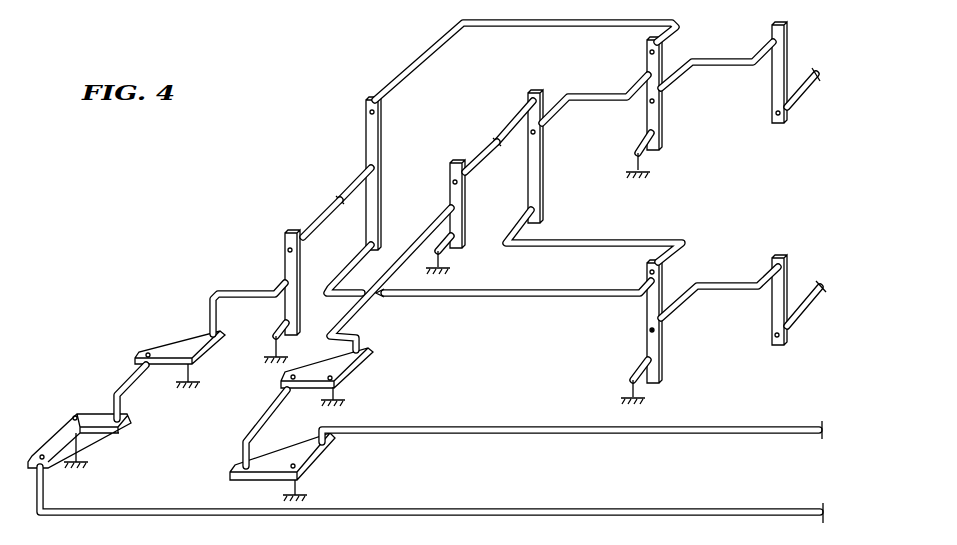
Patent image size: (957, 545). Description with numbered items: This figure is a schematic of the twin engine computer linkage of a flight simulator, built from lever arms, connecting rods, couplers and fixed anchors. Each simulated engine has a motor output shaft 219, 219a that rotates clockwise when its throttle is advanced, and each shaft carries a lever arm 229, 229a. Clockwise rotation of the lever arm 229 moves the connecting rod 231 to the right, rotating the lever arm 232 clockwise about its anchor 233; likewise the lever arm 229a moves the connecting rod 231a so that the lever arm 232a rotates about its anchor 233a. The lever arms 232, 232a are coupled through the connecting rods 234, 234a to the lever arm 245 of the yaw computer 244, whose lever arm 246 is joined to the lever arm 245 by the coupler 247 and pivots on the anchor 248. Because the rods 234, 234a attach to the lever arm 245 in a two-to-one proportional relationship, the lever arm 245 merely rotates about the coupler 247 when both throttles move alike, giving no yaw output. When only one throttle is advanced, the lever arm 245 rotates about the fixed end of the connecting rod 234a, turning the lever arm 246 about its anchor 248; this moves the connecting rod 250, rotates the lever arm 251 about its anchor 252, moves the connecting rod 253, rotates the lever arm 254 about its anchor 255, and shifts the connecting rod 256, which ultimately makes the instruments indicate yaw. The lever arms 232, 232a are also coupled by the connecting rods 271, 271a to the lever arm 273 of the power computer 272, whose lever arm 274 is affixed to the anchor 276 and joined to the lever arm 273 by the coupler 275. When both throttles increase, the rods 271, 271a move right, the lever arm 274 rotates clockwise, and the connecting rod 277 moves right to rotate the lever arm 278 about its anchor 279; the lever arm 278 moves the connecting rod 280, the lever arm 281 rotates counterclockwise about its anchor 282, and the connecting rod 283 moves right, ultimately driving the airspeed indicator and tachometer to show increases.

The output shaft 219 is at (800, 313).
The output shaft 219a is at (802, 97).
The lever arm 229 is at (786, 223).
The lever arm 229a is at (780, 33).
The connecting rod 231 is at (728, 257).
The connecting rod 231a is at (742, 38).
The lever arm 232 is at (647, 308).
The lever arm 232a is at (662, 113).
The anchor 233 is at (633, 377).
The anchor 233a is at (639, 147).
The connecting rod 234 is at (642, 218).
The connecting rod 234a is at (630, 100).
The yaw computer 244 is at (510, 113).
The lever arm 245 is at (532, 172).
The lever arm 246 is at (453, 191).
The coupler 247 is at (472, 157).
The anchor 248 is at (445, 250).
The connecting rod 250 is at (365, 320).
The lever arm 251 is at (352, 368).
The anchor 252 is at (337, 390).
The connecting rod 253 is at (263, 423).
The lever arm 254 is at (258, 477).
The anchor 255 is at (302, 481).
The connecting rod 256 is at (805, 423).
The connecting rod 271 is at (540, 300).
The connecting rod 271a is at (577, 27).
The power computer 272 is at (311, 198).
The lever arm 273 is at (372, 143).
The lever arm 274 is at (285, 238).
The coupler 275 is at (310, 235).
The anchor 276 is at (275, 335).
The connecting rod 277 is at (250, 290).
The lever arm 278 is at (163, 352).
The anchor 279 is at (193, 377).
The connecting rod 280 is at (125, 388).
The lever arm 281 is at (128, 427).
The anchor 282 is at (80, 447).
The connecting rod 283 is at (810, 508).